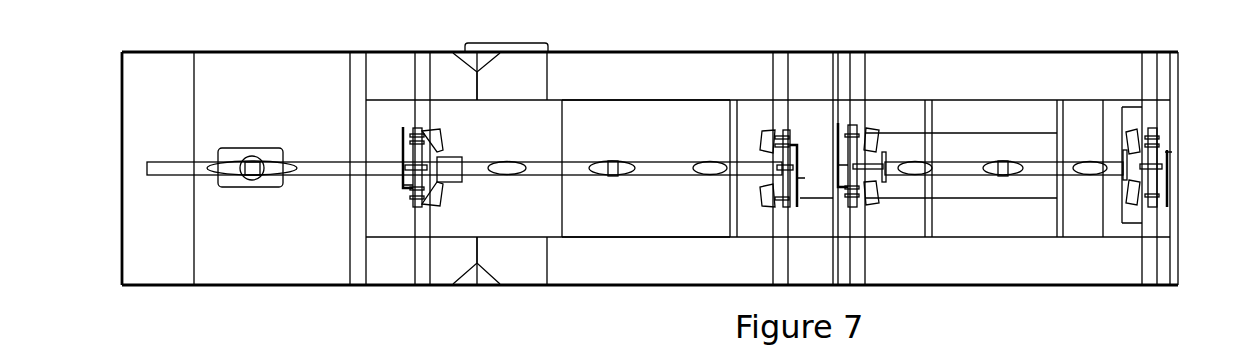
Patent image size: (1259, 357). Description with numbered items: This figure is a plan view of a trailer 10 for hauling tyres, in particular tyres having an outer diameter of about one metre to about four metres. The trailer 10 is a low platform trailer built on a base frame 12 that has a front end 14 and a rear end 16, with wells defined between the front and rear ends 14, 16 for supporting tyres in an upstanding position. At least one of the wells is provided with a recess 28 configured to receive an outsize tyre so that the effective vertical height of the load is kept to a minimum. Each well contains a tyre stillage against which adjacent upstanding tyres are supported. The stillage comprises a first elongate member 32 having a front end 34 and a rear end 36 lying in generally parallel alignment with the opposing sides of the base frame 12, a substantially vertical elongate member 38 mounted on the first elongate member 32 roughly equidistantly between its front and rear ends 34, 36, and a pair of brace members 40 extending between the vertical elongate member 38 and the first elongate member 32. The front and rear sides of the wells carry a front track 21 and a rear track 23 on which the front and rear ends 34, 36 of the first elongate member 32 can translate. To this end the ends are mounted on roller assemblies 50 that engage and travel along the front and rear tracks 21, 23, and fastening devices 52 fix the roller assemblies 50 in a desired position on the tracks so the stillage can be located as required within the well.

The trailer 10 is at (451, 308).
The base frame 12 is at (676, 268).
The front end 14 is at (133, 253).
The rear end 16 is at (1172, 215).
The front track 21 is at (422, 65).
The rear track 23 is at (780, 65).
The recess 28 is at (585, 120).
The first elongate member 32 is at (320, 176).
The front end 34 is at (165, 162).
The rear end 36 is at (400, 165).
The vertical elongate member 38 is at (250, 176).
The brace members 40 is at (235, 160).
The roller assemblies 50 is at (430, 140).
The fastening devices 52 is at (405, 185).